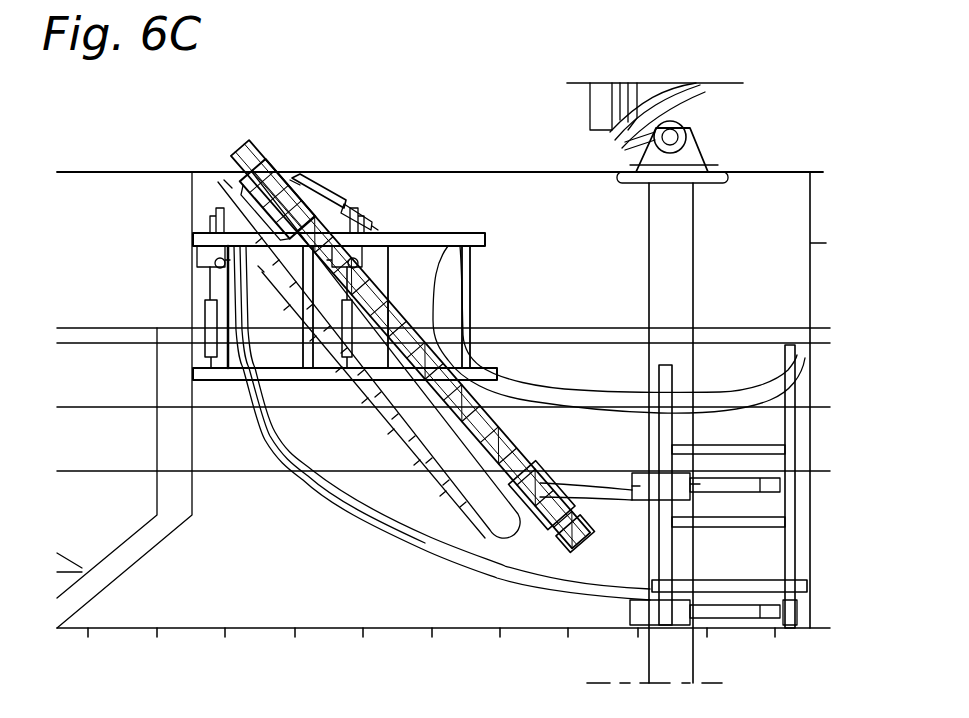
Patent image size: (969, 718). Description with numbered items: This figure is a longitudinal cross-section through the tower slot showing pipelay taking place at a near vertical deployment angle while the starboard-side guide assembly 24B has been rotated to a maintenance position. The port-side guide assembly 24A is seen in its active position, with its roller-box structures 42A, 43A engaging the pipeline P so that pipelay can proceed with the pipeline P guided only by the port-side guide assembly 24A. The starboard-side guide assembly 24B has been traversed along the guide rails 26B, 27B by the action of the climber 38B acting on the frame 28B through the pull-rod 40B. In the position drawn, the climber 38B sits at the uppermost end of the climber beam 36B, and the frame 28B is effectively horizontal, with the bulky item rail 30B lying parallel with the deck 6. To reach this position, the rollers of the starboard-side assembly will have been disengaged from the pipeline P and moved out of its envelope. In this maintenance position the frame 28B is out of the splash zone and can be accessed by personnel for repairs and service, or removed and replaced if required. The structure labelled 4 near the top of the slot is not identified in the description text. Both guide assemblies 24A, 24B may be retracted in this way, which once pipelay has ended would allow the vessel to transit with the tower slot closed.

The deck 6 is at (137, 172).
The crane sheave assembly 4 is at (702, 118).
The pipeline P is at (685, 668).
The port-side guide assembly 24A is at (716, 400).
The starboard-side guide assembly 24B is at (451, 345).
The guide rail 26B is at (800, 358).
The guide rail 27B is at (802, 580).
The frame 28B is at (468, 236).
The bulky item rail 30B is at (193, 240).
The climber beam 36B is at (247, 150).
The climber 38B is at (268, 160).
The pull-rod 40B is at (350, 200).
The roller-box structure 42A is at (690, 478).
The roller-box structure 43A is at (690, 600).